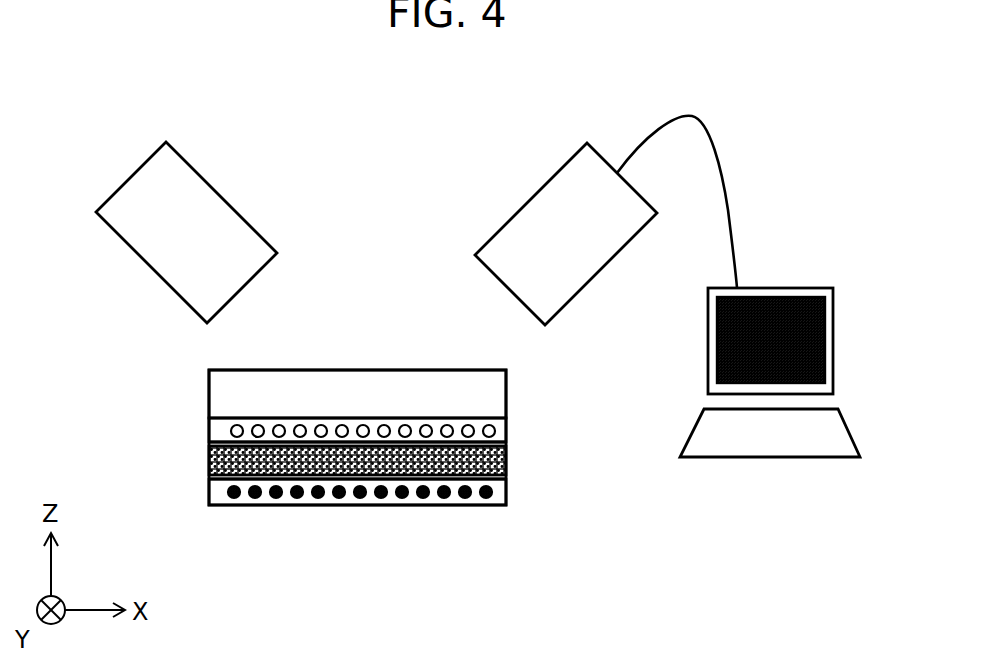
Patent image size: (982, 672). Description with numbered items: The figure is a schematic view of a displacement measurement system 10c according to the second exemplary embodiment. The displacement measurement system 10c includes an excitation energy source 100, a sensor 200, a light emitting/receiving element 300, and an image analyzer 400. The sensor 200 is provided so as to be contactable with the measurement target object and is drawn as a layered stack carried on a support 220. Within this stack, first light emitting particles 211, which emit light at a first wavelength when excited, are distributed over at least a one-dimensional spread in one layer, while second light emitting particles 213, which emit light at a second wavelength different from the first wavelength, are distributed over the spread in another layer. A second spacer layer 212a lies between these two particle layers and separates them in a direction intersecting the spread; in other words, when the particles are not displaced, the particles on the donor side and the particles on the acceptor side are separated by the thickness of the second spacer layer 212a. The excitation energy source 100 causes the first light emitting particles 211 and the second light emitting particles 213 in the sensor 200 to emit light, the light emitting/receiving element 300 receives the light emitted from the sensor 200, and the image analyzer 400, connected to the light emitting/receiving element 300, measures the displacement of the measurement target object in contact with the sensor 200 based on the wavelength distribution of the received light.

The displacement measurement system 10c is at (432, 86).
The excitation energy source 100 is at (229, 205).
The light emitting/receiving element 300 is at (521, 209).
The image analyzer 400 is at (787, 287).
The sensor 200 is at (203, 416).
The support 220 is at (506, 395).
The second light emitting particles 213 is at (506, 431).
The second spacer layer 212a is at (506, 461).
The first light emitting particles 211 is at (506, 493).